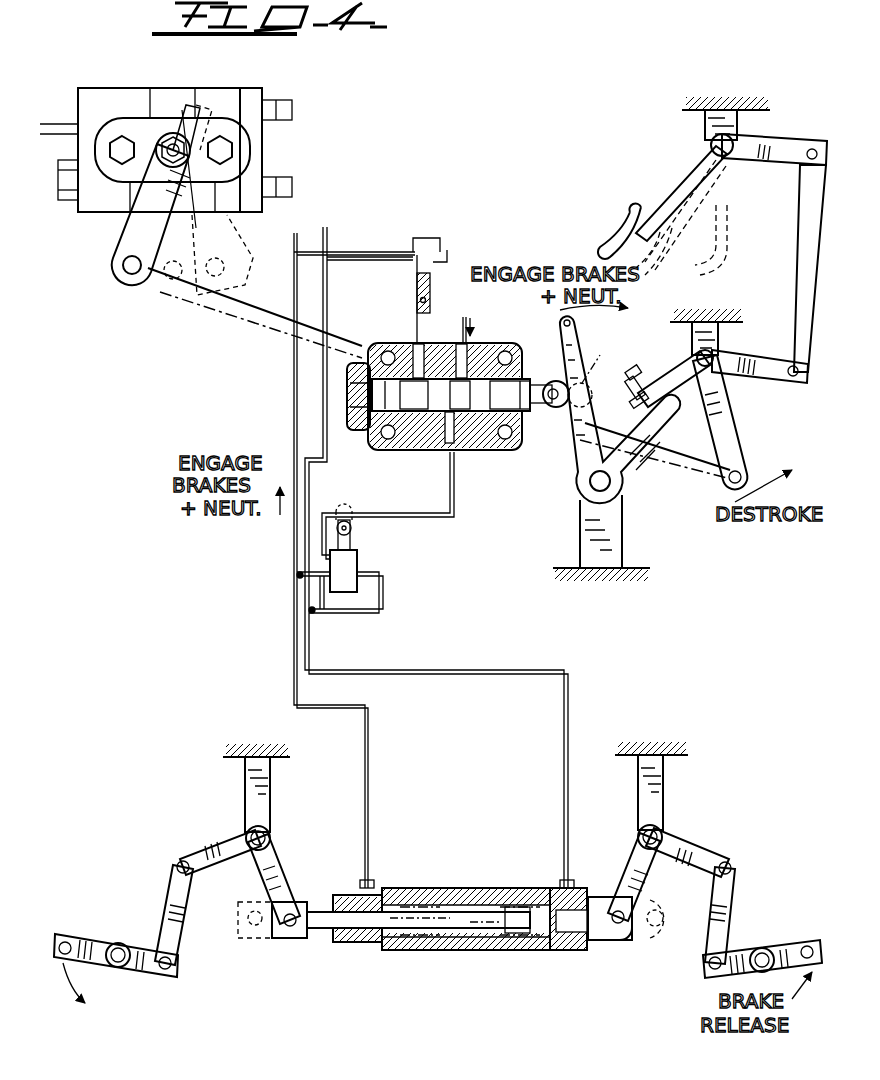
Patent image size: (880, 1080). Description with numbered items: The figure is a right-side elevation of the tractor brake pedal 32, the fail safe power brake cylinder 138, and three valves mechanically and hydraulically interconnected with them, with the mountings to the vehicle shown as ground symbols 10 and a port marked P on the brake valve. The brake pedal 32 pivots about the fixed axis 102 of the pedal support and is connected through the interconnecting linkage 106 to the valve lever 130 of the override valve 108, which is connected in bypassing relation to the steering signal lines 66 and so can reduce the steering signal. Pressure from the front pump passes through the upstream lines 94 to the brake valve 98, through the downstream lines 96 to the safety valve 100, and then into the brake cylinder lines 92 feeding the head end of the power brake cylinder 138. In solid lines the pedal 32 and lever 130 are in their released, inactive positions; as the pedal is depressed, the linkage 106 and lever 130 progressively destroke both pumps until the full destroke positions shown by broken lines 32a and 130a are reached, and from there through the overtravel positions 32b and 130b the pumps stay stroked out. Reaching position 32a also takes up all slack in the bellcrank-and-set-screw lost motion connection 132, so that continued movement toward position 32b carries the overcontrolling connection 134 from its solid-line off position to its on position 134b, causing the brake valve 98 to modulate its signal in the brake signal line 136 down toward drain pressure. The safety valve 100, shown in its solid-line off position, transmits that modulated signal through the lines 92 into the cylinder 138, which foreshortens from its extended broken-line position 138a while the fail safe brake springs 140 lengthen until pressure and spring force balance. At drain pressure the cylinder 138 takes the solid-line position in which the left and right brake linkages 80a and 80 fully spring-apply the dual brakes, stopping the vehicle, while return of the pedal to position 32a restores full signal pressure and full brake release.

The vehicle frame ground 10 is at (770, 108).
The brake pedal 32 is at (622, 220).
The full destroke position of brake pedal 32a is at (690, 215).
The fully depressed parking position of brake pedal 32b is at (725, 232).
The steering signal lines 66 is at (78, 128).
The right brake linkage 80 is at (703, 936).
The left brake linkage 80a is at (183, 935).
The brake cylinder lines 92 is at (325, 238).
The upstream lines 94 is at (440, 322).
The downstream lines 96 is at (325, 585).
The brake valve 98 is at (388, 343).
The safety valve 100 is at (358, 560).
The axis of pedal support 102 is at (712, 145).
The interconnecting linkage 106 is at (256, 312).
The override valve 108 is at (93, 205).
The valve lever 130 is at (108, 270).
The full destroke position of valve lever 130a is at (157, 290).
The destroke overtravel position of valve lever 130b is at (245, 262).
The bellcrank-and-set-screw lost motion connection 132 is at (678, 405).
The overcontrolling connection 134 is at (554, 382).
The on position of overcontrolling connection 134b is at (594, 384).
The brake signal line 136 is at (388, 513).
The power brake cylinder 138 is at (462, 888).
The extended position of power brake cylinder 138a is at (238, 938).
The fail safe brake springs 140 is at (410, 950).
The pressure port P is at (450, 249).